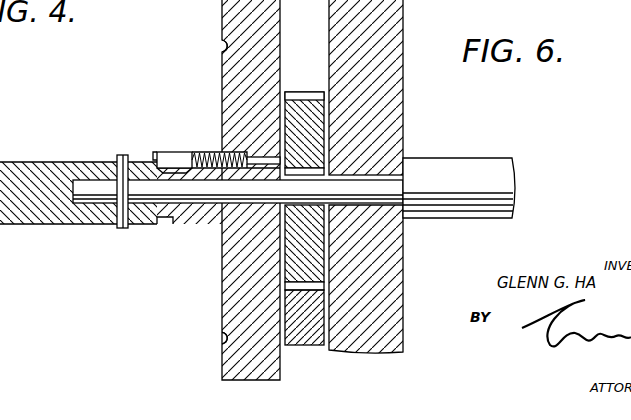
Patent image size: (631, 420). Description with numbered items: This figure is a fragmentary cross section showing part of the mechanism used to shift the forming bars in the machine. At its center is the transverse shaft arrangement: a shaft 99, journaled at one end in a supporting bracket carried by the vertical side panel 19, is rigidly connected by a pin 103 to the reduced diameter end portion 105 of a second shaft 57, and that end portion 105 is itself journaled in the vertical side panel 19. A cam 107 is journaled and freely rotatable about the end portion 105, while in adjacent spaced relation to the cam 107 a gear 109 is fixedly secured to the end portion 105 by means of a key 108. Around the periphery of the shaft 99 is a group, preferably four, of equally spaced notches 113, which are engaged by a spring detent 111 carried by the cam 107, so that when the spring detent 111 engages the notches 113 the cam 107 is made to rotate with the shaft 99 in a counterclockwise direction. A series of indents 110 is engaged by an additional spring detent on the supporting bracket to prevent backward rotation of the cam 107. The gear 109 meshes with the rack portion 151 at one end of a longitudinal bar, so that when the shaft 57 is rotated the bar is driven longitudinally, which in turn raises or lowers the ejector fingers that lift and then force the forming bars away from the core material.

The vertical side panel 19 is at (385, 14).
The shaft 57 is at (448, 166).
The shaft 99 is at (33, 164).
The pin 103 is at (122, 155).
The reduced diameter end portion 105 is at (80, 182).
The cam 107 is at (230, 20).
The key 108 is at (317, 172).
The gear 109 is at (297, 103).
The indents 110 is at (226, 50).
The spring detent 111 is at (200, 152).
The notches 113 is at (162, 152).
The rack portion 151 is at (310, 340).